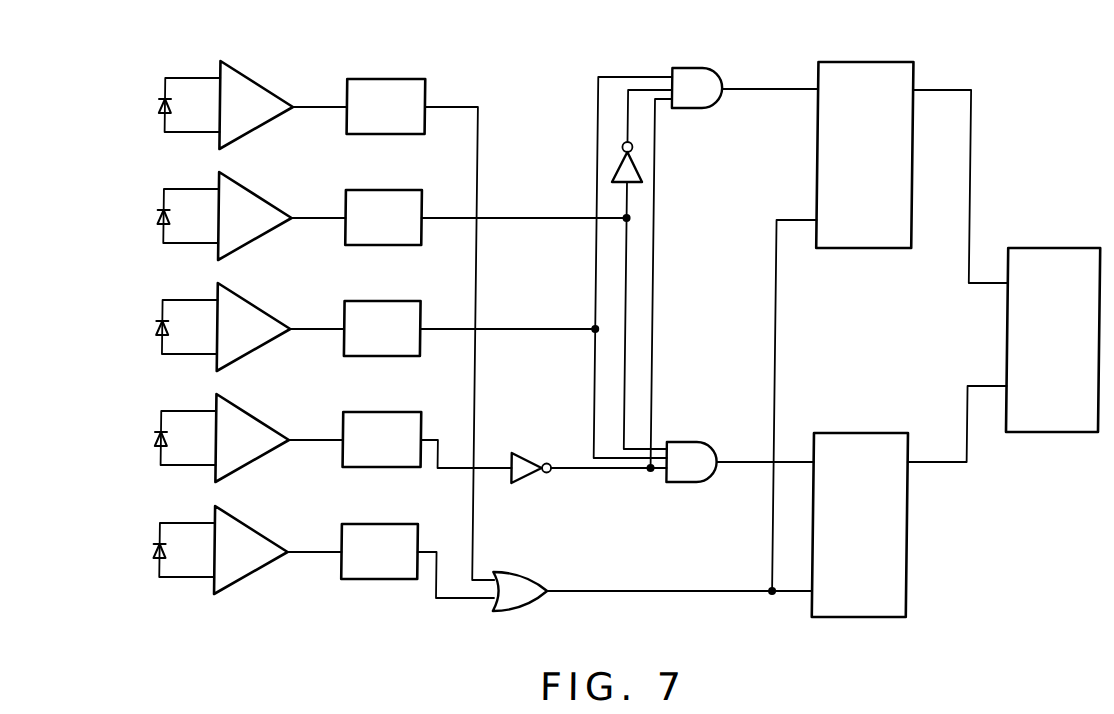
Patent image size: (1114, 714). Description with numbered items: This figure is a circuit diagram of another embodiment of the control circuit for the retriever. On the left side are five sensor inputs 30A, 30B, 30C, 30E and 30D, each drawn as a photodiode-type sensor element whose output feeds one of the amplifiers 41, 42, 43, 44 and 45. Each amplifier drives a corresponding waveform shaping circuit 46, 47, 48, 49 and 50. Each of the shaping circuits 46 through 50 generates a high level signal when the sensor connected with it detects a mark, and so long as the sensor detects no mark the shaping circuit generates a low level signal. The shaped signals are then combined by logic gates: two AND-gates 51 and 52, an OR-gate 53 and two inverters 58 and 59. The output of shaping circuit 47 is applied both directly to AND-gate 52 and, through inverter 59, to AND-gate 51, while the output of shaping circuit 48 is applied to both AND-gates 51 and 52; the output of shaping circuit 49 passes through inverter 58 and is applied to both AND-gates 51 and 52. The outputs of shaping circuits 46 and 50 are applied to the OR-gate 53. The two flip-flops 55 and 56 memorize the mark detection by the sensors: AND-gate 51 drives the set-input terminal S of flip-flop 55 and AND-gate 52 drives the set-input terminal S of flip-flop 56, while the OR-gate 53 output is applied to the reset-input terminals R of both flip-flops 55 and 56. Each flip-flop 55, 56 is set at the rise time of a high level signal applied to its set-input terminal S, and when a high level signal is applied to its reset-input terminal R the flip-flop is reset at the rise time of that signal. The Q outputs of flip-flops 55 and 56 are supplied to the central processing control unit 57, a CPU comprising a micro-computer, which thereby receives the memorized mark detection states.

The photodiode 30A is at (158, 99).
The photodiode 30B is at (159, 213).
The photodiode 30C is at (160, 324).
The photodiode 30D is at (163, 547).
The photodiode 30E is at (162, 435).
The amplifier 41 is at (250, 75).
The amplifier 42 is at (251, 198).
The amplifier 43 is at (252, 308).
The amplifier 44 is at (257, 420).
The amplifier 45 is at (258, 537).
The waveform shaping circuit 46 is at (387, 78).
The waveform shaping circuit 47 is at (389, 189).
The waveform shaping circuit 48 is at (390, 300).
The waveform shaping circuit 49 is at (389, 412).
The waveform shaping circuit 50 is at (380, 524).
The AND-gate 51 is at (698, 68).
The AND-gate 52 is at (697, 442).
The OR-gate 53 is at (528, 572).
The flip-flop 55 is at (875, 62).
The flip-flop 56 is at (874, 433).
The central processing control unit (CPU) 57 is at (1072, 248).
The inverter 58 is at (527, 455).
The inverter 59 is at (639, 155).